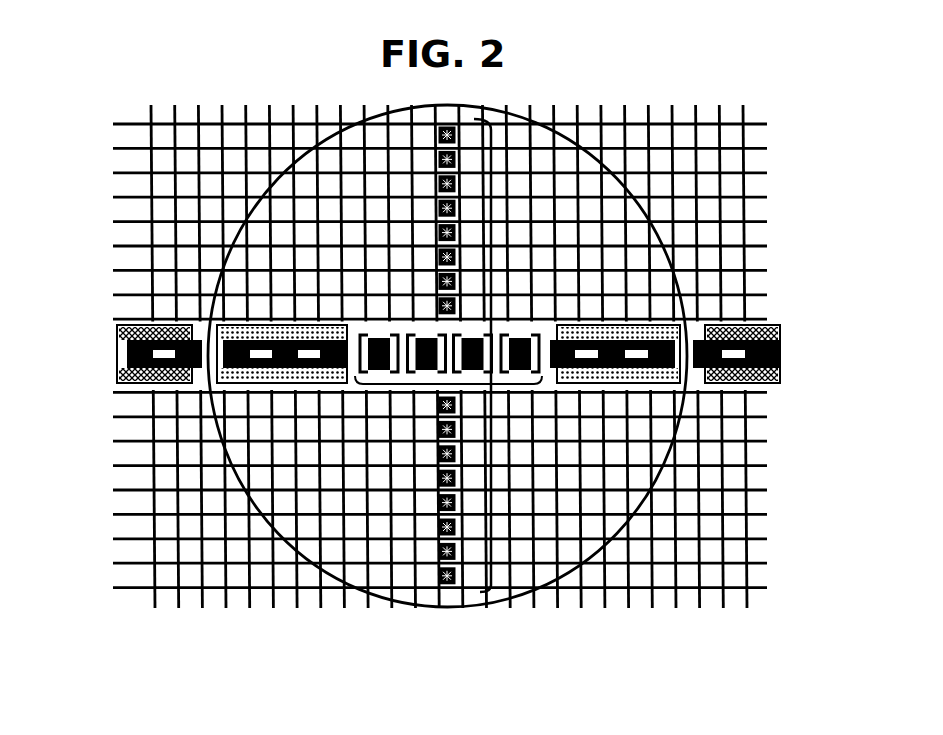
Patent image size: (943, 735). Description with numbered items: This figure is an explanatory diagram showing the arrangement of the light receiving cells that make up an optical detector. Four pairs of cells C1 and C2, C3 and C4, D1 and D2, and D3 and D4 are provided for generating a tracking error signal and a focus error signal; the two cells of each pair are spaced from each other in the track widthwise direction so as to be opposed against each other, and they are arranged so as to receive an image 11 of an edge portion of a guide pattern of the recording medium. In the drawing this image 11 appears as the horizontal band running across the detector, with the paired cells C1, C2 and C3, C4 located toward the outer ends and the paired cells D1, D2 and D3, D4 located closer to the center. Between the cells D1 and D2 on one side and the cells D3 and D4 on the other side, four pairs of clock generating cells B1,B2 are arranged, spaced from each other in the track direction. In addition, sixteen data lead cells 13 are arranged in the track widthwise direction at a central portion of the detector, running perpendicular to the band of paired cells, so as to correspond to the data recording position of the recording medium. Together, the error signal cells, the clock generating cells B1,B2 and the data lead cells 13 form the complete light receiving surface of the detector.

The image of an edge portion of a guide pattern 11 is at (127, 354).
The data lead cells 13 is at (492, 422).
The clock generating cells B1,B2 is at (405, 384).
The cell C1 is at (131, 325).
The cell C2 is at (130, 380).
The cell C3 is at (752, 325).
The cell C4 is at (762, 384).
The cell D1 is at (231, 326).
The cell D2 is at (248, 384).
The cell D3 is at (612, 326).
The cell D4 is at (640, 383).